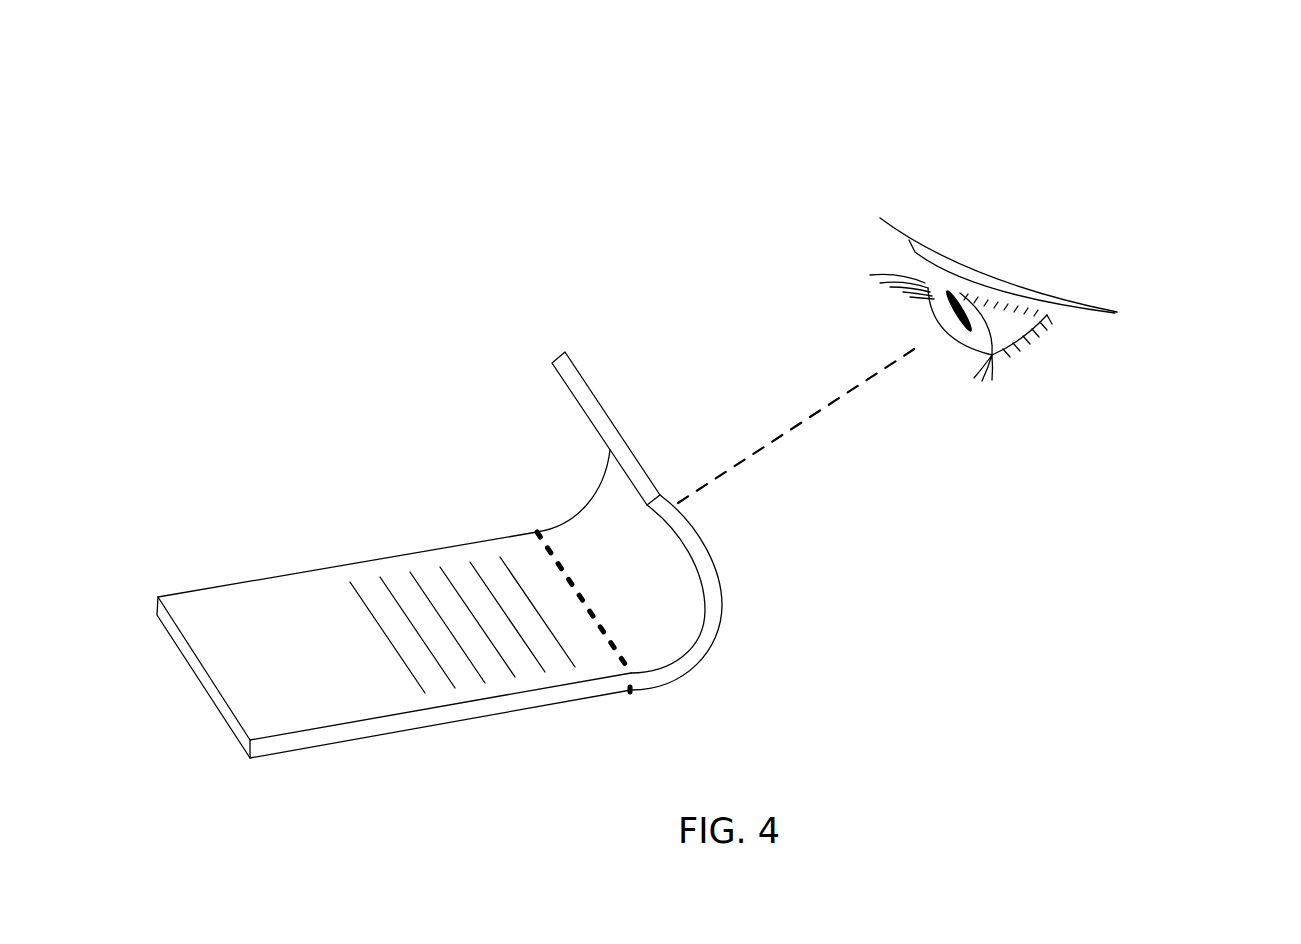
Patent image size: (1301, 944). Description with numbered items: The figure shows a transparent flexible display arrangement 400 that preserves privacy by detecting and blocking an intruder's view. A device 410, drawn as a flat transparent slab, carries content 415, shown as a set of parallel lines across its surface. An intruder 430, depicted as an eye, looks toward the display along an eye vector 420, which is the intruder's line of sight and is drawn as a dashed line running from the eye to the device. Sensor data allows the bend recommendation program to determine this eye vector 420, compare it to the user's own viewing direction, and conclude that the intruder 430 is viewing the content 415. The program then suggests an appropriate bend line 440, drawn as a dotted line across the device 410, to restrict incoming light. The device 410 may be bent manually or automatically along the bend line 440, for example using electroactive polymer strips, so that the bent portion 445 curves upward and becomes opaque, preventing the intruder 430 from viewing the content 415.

The eye tracking / display system 400 is at (1152, 102).
The device 410 is at (265, 577).
The content 415 is at (382, 632).
The eye vector 420 is at (807, 412).
The intruder 430 is at (975, 252).
The bend line 440 is at (578, 590).
The bent portion 445 is at (600, 522).